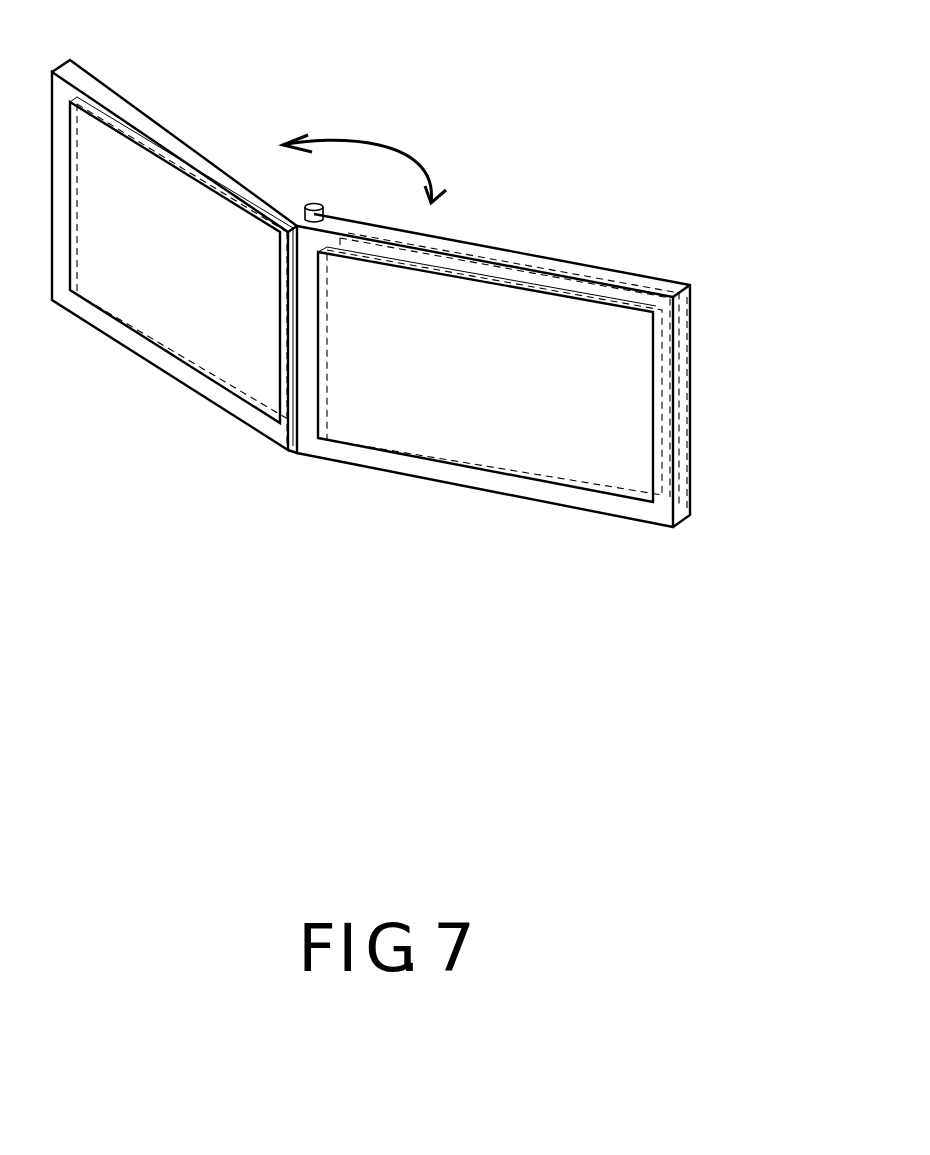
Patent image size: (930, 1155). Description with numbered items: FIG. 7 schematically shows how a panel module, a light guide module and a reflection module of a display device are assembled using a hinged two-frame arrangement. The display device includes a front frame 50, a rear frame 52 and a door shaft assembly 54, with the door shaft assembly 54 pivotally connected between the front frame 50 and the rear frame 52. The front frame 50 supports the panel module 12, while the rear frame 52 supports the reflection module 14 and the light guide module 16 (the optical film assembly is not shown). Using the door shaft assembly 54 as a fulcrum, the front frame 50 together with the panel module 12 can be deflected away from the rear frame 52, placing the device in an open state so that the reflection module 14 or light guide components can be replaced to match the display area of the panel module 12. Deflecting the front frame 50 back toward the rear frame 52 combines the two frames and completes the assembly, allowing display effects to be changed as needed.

The front frame 50 is at (147, 120).
The rear frame 52 is at (515, 252).
The door shaft assembly 54 is at (325, 213).
The panel module 12 is at (158, 340).
The reflection module 14 is at (692, 513).
The light guide module 16 is at (667, 490).